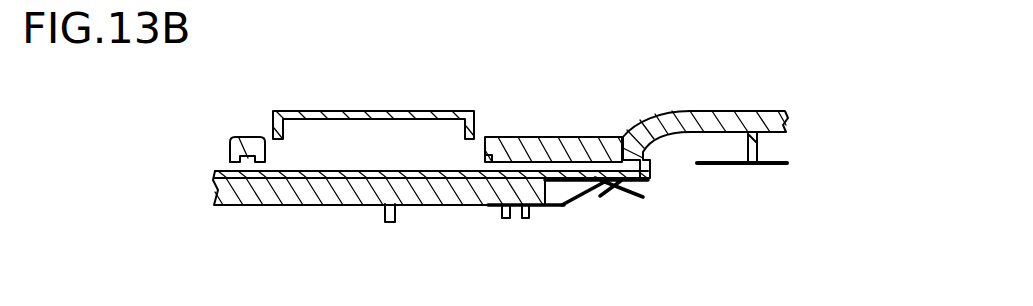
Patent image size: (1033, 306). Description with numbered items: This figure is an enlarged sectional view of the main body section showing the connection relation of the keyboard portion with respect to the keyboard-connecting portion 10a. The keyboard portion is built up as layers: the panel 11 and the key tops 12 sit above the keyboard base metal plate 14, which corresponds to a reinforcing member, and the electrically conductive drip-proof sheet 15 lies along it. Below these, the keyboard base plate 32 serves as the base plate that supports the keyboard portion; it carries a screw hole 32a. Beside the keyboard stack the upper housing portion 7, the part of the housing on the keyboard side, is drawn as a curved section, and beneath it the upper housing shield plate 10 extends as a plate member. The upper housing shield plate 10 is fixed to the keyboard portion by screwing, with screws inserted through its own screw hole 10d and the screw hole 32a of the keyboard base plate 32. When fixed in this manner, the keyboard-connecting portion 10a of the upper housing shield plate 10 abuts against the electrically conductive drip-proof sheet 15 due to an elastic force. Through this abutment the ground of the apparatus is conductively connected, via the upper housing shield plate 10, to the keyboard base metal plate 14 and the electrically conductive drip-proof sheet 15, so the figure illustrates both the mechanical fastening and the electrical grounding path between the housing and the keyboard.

The upper housing portion 7 is at (707, 110).
The upper housing shield plate 10 is at (713, 165).
The keyboard-connecting portion 10a is at (592, 205).
The screw hole 10d is at (500, 210).
The panel 11 is at (518, 142).
The key tops 12 is at (420, 112).
The keyboard base metal plate 14 is at (563, 172).
The electrically conductive drip-proof sheet 15 is at (553, 205).
The keyboard base plate 32 is at (410, 206).
The screw hole 32a is at (513, 210).